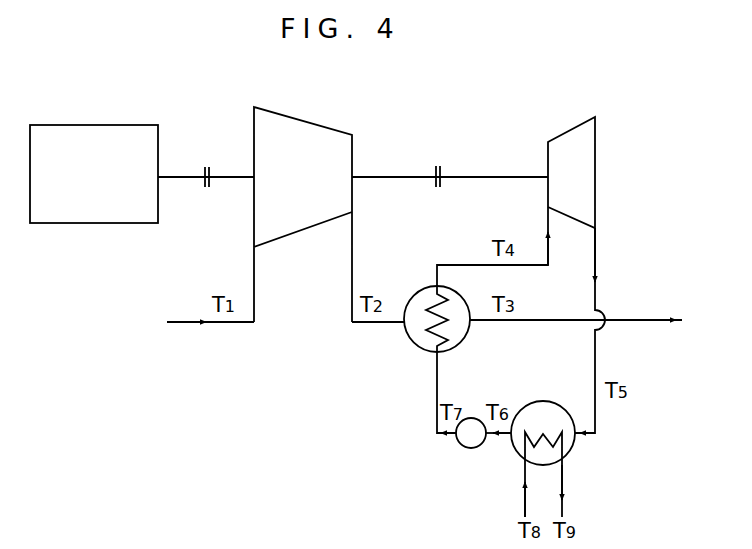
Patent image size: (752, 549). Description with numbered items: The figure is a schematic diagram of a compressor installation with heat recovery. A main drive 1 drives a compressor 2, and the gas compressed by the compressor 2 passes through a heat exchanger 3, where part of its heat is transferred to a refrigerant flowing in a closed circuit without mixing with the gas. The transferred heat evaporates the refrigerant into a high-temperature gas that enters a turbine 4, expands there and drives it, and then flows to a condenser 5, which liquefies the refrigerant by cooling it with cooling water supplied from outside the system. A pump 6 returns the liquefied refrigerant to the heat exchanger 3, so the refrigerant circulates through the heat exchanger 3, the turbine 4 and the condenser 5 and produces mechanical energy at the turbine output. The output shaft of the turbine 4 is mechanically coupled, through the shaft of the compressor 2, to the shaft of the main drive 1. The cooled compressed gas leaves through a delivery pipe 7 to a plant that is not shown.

The main drive 1 is at (103, 210).
The compressor 2 is at (302, 218).
The heat exchanger 3 is at (407, 345).
The turbine 4 is at (587, 197).
The condenser 5 is at (572, 447).
The pump 6 is at (463, 447).
The delivery pipe 7 is at (648, 318).